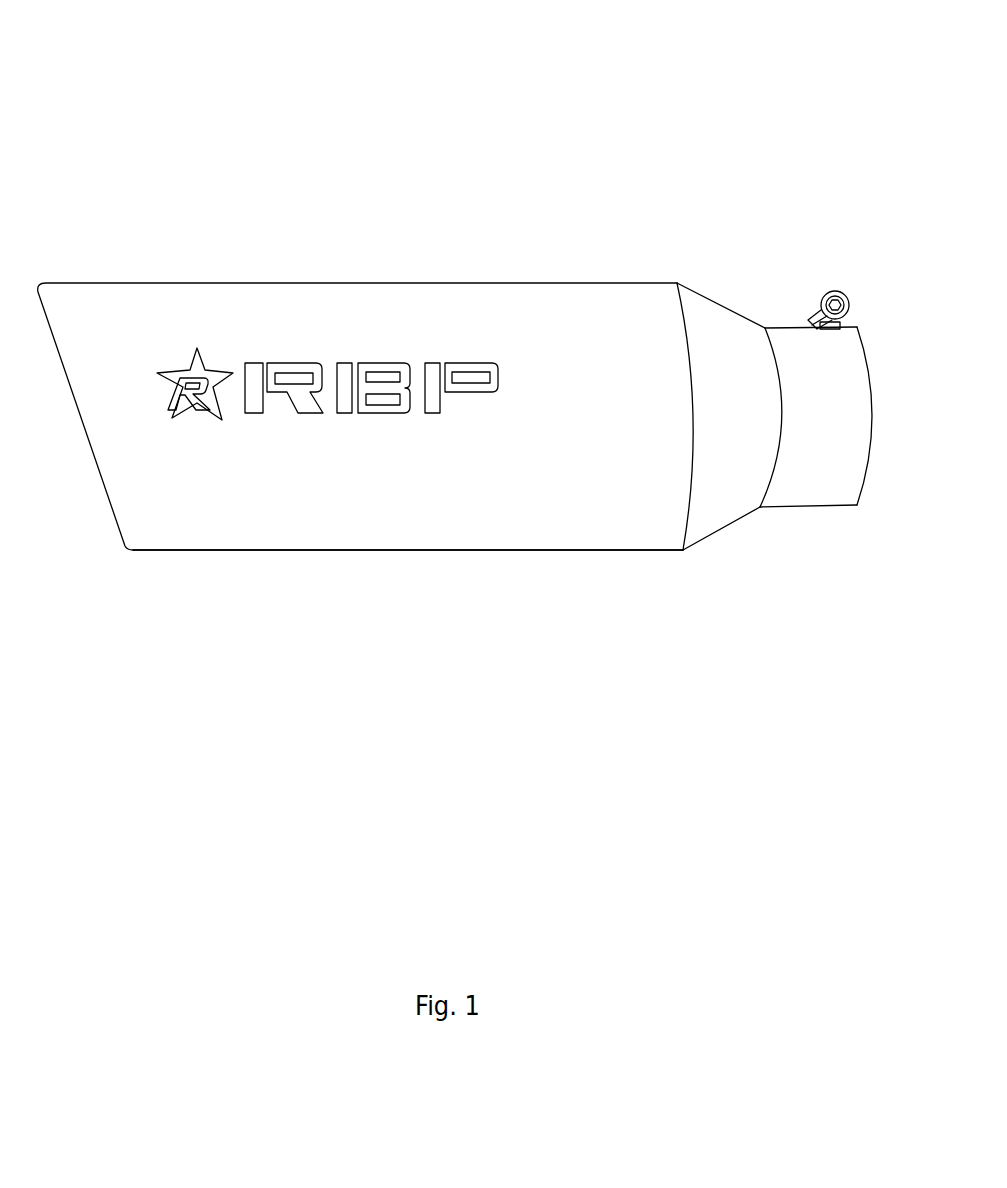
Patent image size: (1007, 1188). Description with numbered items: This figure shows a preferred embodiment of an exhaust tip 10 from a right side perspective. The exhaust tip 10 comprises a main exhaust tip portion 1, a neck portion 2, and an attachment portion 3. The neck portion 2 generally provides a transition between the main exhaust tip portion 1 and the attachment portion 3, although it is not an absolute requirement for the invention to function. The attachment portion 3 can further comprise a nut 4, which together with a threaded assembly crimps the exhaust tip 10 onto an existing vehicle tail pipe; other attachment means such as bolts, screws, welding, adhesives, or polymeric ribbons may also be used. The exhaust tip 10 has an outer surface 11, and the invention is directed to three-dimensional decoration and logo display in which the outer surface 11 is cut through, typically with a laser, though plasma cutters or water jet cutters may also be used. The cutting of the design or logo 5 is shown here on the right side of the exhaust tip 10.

The exhaust tip 10 is at (632, 150).
The main exhaust tip portion 1 is at (106, 320).
The neck portion 2 is at (717, 345).
The attachment portion 3 is at (817, 450).
The nut 4 is at (830, 287).
The design or logo 5 is at (248, 368).
The outer surface 11 is at (262, 747).